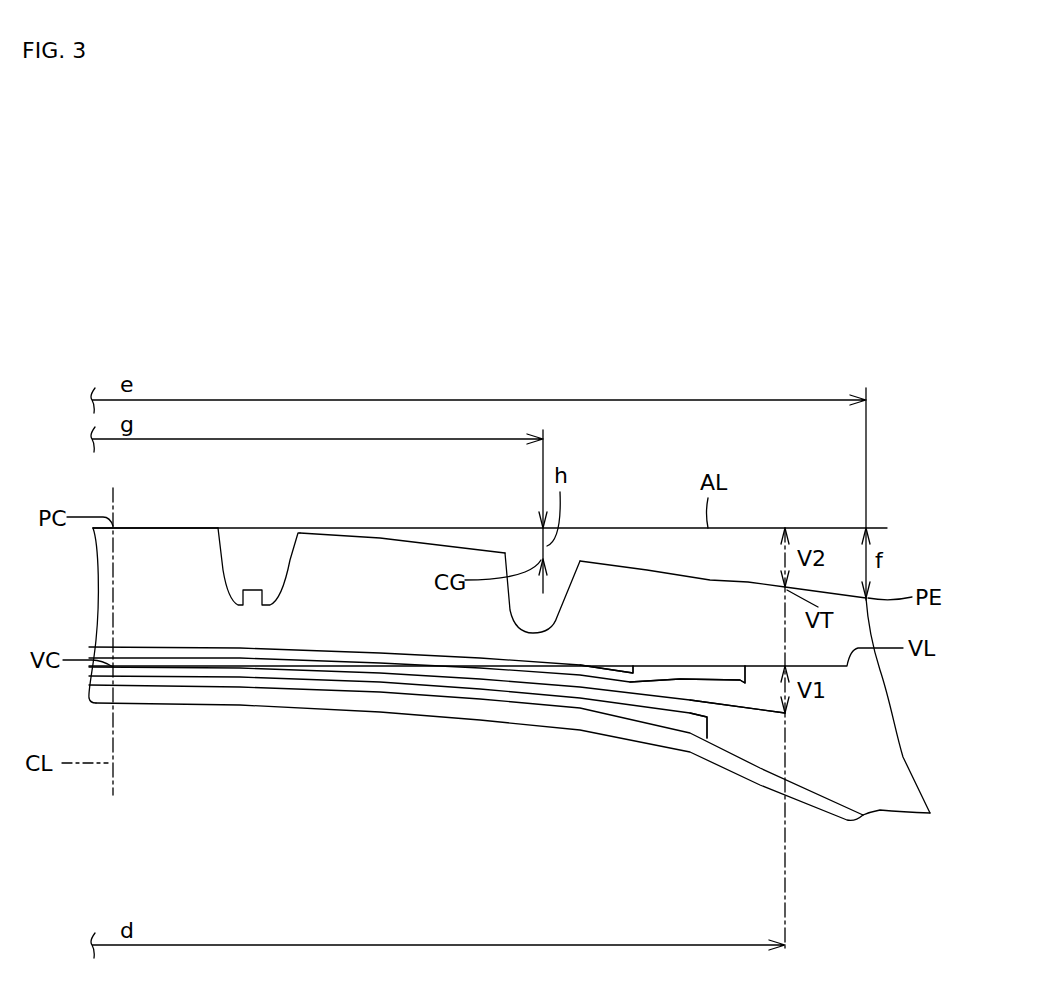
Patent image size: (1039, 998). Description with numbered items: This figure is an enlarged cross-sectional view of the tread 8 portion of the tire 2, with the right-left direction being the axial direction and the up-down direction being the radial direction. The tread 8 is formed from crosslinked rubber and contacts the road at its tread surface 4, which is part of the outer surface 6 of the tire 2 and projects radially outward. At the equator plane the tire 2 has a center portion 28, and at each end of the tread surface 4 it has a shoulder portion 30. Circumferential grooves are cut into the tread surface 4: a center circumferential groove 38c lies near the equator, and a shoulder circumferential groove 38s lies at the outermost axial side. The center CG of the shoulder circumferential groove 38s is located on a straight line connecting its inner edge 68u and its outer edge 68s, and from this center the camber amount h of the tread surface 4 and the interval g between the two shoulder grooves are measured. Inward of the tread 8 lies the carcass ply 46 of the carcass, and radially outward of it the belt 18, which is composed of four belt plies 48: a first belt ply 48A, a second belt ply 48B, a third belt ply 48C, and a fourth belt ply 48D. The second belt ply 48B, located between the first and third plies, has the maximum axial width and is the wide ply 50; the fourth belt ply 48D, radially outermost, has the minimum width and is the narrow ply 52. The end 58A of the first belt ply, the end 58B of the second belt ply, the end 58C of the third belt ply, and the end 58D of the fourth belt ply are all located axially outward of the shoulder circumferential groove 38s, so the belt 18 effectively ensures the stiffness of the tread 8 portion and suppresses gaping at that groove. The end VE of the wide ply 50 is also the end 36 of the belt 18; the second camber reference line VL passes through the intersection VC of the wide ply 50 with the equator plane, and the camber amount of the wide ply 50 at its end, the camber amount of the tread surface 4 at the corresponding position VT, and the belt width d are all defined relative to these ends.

The tire 2 is at (817, 387).
The tread surface 4 is at (348, 533).
The outer surface 6 is at (407, 538).
The tread 8 is at (647, 570).
The belt 18 is at (437, 771).
The center portion 28 is at (180, 528).
The shoulder portion 30 is at (748, 582).
The end of the belt 36 is at (479, 810).
The center circumferential groove 38c is at (223, 560).
The shoulder circumferential groove 38s is at (512, 610).
The carcass ply 46 is at (815, 790).
The belt ply 48 is at (437, 745).
The first belt ply 48A is at (217, 680).
The second belt ply 48B is at (437, 755).
The third belt ply 48C is at (337, 662).
The fourth belt ply 48D is at (361, 745).
The wide ply 50 is at (285, 672).
The narrow ply 52 is at (405, 653).
The end of the first belt ply 58A is at (705, 720).
The end of the second belt ply 58B is at (785, 713).
The end of the third belt ply 58C is at (747, 666).
The end of the fourth belt ply 58D is at (633, 666).
The inner edge 68u is at (508, 553).
The outer edge 68s is at (578, 555).